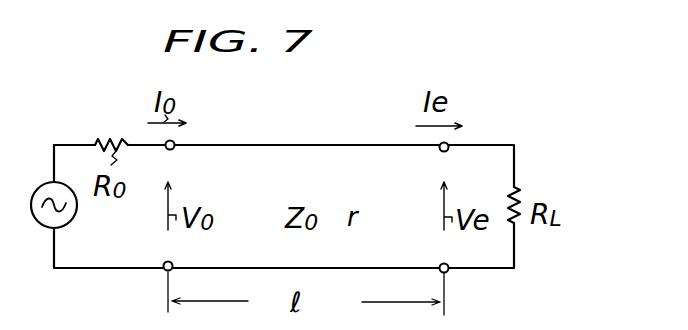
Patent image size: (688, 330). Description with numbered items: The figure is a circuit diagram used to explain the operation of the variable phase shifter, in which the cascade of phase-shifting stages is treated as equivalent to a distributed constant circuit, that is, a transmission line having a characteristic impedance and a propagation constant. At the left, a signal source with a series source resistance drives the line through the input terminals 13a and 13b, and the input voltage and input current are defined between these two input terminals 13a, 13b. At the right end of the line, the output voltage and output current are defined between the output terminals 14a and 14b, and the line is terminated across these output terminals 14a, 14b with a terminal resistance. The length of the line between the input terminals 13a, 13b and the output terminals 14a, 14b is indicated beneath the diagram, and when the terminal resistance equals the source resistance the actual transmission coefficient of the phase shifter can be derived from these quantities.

The input terminal 13a is at (174, 142).
The input terminal 13b is at (165, 270).
The output terminal 14a is at (448, 144).
The output terminal 14b is at (447, 272).